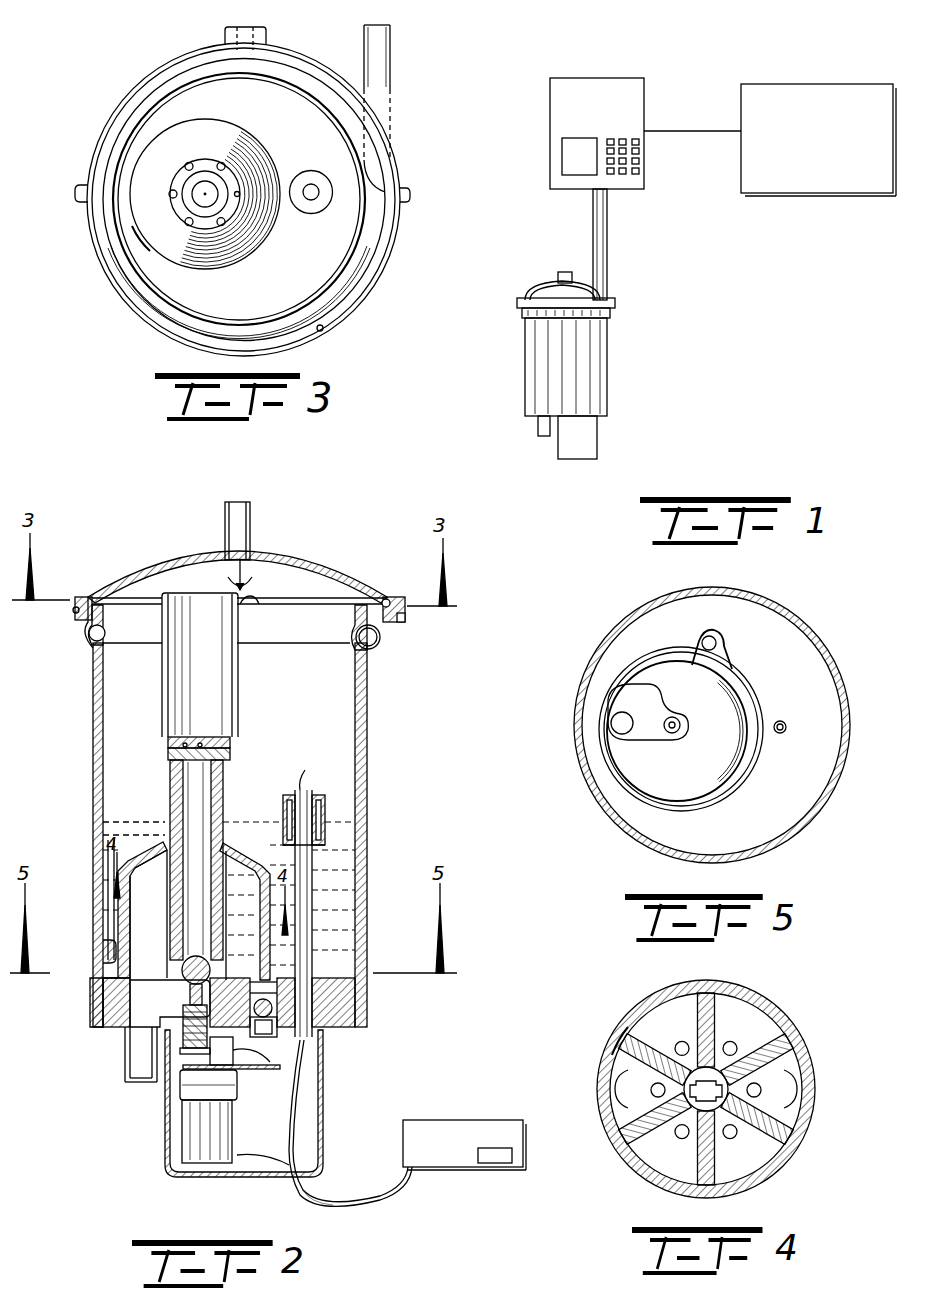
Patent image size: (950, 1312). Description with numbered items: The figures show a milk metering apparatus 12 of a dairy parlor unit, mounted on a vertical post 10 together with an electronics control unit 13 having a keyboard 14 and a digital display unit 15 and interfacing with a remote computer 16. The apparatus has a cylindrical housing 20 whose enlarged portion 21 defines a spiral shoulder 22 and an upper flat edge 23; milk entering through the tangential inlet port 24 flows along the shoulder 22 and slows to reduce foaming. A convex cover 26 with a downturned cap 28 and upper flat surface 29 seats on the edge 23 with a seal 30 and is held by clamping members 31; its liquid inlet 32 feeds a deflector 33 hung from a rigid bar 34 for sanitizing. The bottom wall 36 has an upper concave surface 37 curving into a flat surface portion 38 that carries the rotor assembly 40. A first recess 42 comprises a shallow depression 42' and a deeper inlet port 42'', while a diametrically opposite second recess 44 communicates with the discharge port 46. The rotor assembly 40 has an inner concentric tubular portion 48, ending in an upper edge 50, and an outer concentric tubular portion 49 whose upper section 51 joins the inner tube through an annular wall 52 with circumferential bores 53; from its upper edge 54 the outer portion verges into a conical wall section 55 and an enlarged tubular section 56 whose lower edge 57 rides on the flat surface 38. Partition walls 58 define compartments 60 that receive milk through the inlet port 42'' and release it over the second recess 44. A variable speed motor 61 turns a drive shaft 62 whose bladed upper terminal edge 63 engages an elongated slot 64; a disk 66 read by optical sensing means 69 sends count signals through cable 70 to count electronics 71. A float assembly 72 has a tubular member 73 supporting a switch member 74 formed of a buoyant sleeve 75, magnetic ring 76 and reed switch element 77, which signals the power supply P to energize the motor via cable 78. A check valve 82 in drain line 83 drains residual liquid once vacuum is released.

In FIG. 1, the vertical post 10 is at (607, 242).
In FIG. 1, the metering apparatus 12 is at (607, 365).
In FIG. 1, the electronics control unit 13 is at (550, 105).
In FIG. 1, the keyboard 14 is at (640, 165).
In FIG. 1, the digital display unit 15 is at (562, 155).
In FIG. 1, the computer 16 is at (812, 195).
In FIG. 2, the cylindrical housing 20 is at (367, 870).
In FIG. 3, the enlarged portion 21 is at (110, 280).
In FIG. 2, the enlarged portion 21 is at (85, 640).
In FIG. 3, the shoulder 22 is at (348, 300).
In FIG. 2, the shoulder 22 is at (88, 632).
In FIG. 3, the upper flat edge 23 is at (322, 330).
In FIG. 2, the upper flat edge 23 is at (92, 612).
In FIG. 3, the tangential inlet port 24 is at (390, 62).
In FIG. 2, the tangential inlet port 24 is at (380, 645).
In FIG. 2, the cover 26 is at (197, 560).
In FIG. 2, the downturned cap 28 is at (78, 596).
In FIG. 2, the upper flat surface 29 is at (93, 600).
In FIG. 2, the seal 30 is at (386, 598).
In FIG. 3, the clamping members 31 is at (75, 190).
In FIG. 2, the clamping members 31 is at (72, 603).
In FIG. 2, the liquid inlet 32 is at (250, 515).
In FIG. 2, the deflector 33 is at (252, 585).
In FIG. 2, the rigid bar 34 is at (245, 565).
In FIG. 2, the bottom wall 36 is at (110, 960).
In FIG. 2, the upper concave surface 37 is at (330, 973).
In FIG. 2, the flat surface portion 38 is at (142, 977).
In FIG. 4, the rotor assembly 40 is at (802, 1038).
In FIG. 2, the rotor assembly 40 is at (153, 792).
In FIG. 5, the first recess 42 is at (682, 725).
In FIG. 5, the shallow depression 42' is at (655, 740).
In FIG. 2, the shallow depression 42' is at (84, 991).
In FIG. 5, the inlet port 42'' is at (713, 715).
In FIG. 2, the inlet port 42'' is at (247, 961).
In FIG. 5, the second recess 44 is at (637, 732).
In FIG. 2, the second recess 44 is at (137, 1000).
In FIG. 5, the discharge port 46 is at (611, 722).
In FIG. 2, the discharge port 46 is at (135, 1047).
In FIG. 4, the inner concentric tubular portion 48 is at (663, 1100).
In FIG. 2, the inner concentric tubular portion 48 is at (178, 890).
In FIG. 4, the outer concentric tubular portion 49 is at (628, 1027).
In FIG. 2, the outer concentric tubular portion 49 is at (122, 860).
In FIG. 3, the upper edge 50 is at (182, 196).
In FIG. 2, the upper edge 50 is at (220, 740).
In FIG. 3, the upper section 51 is at (238, 175).
In FIG. 2, the upper section 51 is at (238, 662).
In FIG. 3, the annular wall 52 is at (222, 162).
In FIG. 2, the annular wall 52 is at (235, 762).
In FIG. 3, the circumferential bores 53 is at (193, 162).
In FIG. 4, the circumferential bores 53 is at (737, 1043).
In FIG. 2, the circumferential bores 53 is at (186, 738).
In FIG. 2, the upper edge 54 is at (255, 602).
In FIG. 3, the conical wall section 55 is at (148, 160).
In FIG. 2, the conical wall section 55 is at (147, 843).
In FIG. 3, the enlarged tubular section 56 is at (138, 230).
In FIG. 2, the enlarged tubular section 56 is at (118, 915).
In FIG. 2, the lower edge 57 is at (267, 990).
In FIG. 4, the partition walls 58 is at (617, 1065).
In FIG. 4, the compartments 60 is at (662, 1015).
In FIG. 2, the compartments 60 is at (140, 872).
In FIG. 2, the variable speed motor 61 is at (192, 1135).
In FIG. 2, the drive shaft 62 is at (185, 993).
In FIG. 2, the upper terminal edge 63 is at (193, 955).
In FIG. 4, the elongated slot 64 is at (722, 1089).
In FIG. 2, the elongated slot 64 is at (170, 1102).
In FIG. 2, the disk 66 is at (180, 1055).
In FIG. 2, the optical sensing means 69 is at (233, 1050).
In FIG. 2, the cable 70 is at (333, 1200).
In FIG. 2, the count electronics 71 is at (495, 1163).
In FIG. 2, the float assembly 72 is at (313, 917).
In FIG. 3, the tubular member 73 is at (311, 184).
In FIG. 5, the tubular member 73 is at (783, 722).
In FIG. 2, the tubular member 73 is at (305, 790).
In FIG. 3, the switch member 74 is at (311, 212).
In FIG. 2, the switch member 74 is at (327, 817).
In FIG. 2, the buoyant sleeve 75 is at (322, 842).
In FIG. 2, the magnetic ring 76 is at (323, 807).
In FIG. 2, the reed switch element 77 is at (283, 820).
In FIG. 2, the cable 78 is at (290, 1200).
In FIG. 2, the check valve 82 is at (273, 1007).
In FIG. 2, the drain line 83 is at (270, 993).
In FIG. 2, the power supply P is at (483, 1120).